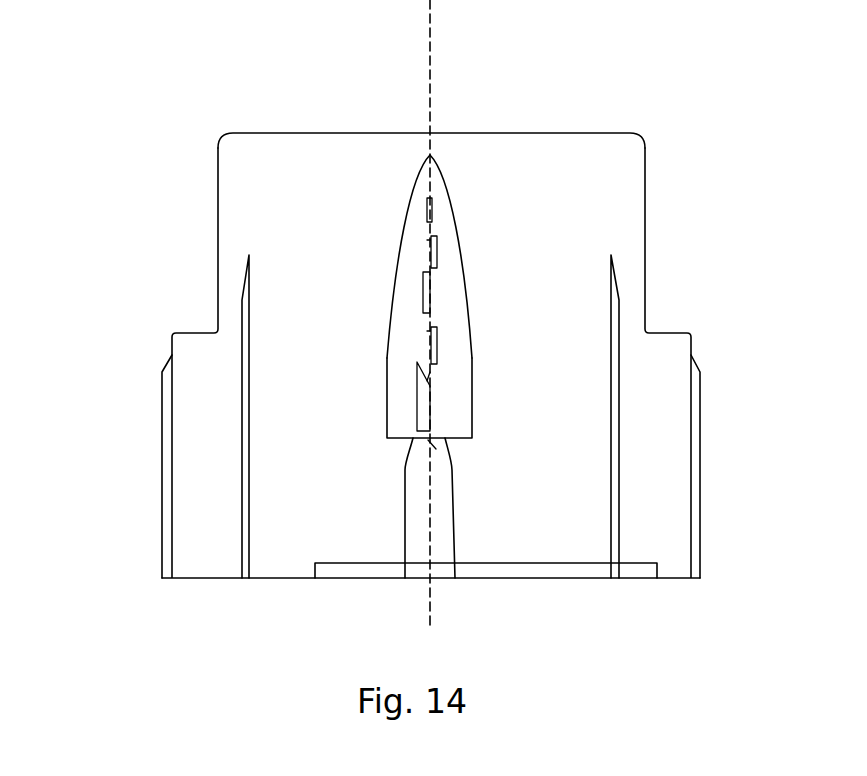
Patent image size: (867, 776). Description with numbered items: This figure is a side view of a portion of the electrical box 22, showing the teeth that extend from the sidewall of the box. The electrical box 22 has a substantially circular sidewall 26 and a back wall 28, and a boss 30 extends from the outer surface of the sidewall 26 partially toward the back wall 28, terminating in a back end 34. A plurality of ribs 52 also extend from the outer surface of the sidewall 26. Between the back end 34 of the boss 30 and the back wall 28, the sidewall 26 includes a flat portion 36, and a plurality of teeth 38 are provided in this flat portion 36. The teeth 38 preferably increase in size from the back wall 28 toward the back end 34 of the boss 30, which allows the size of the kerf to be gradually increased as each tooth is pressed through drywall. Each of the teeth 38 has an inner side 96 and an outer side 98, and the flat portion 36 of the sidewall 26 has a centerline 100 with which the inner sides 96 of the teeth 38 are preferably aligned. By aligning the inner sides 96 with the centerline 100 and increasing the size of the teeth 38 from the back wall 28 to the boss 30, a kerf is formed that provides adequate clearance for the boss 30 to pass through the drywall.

The electrical box 22 is at (134, 183).
The sidewall 26 is at (307, 312).
The back wall 28 is at (510, 132).
The boss 30 is at (455, 520).
The back end 34 is at (428, 440).
The flat portion 36 is at (462, 413).
The teeth 38 is at (467, 283).
The ribs 52 is at (162, 443).
The inner sides 96 is at (430, 251).
The outer sides 98 is at (430, 251).
The centerline 100 is at (428, 62).